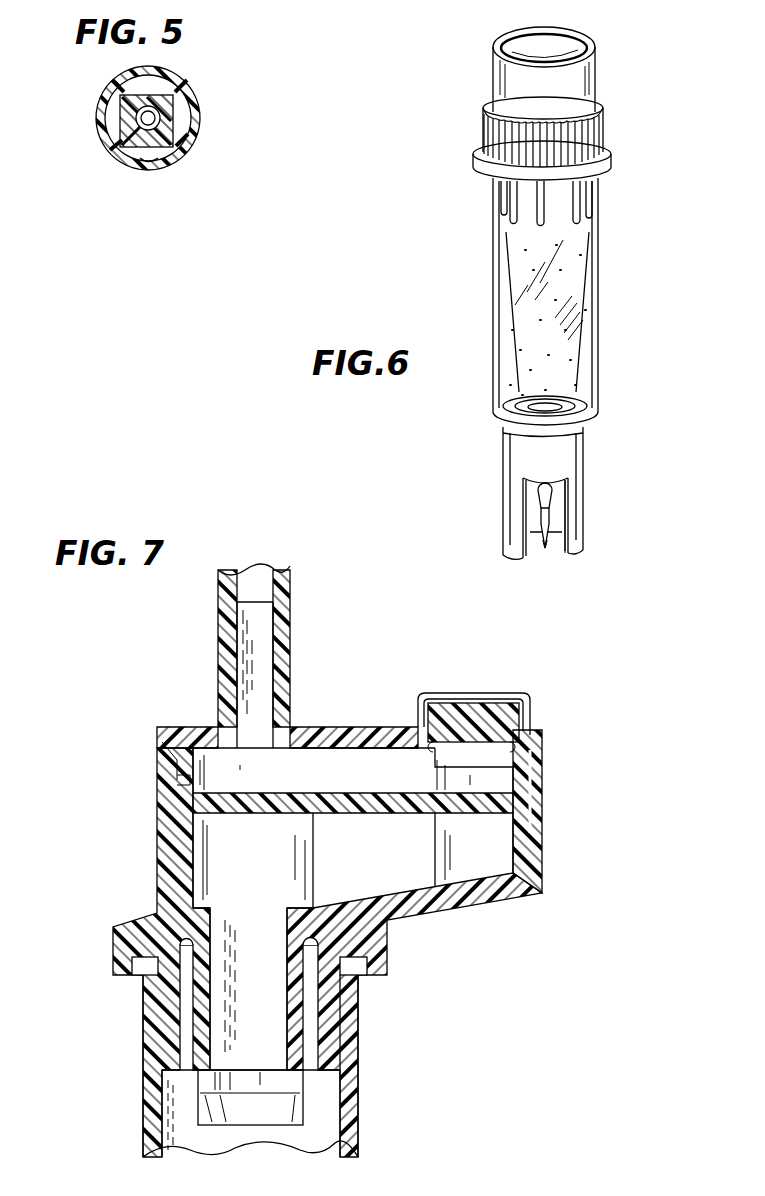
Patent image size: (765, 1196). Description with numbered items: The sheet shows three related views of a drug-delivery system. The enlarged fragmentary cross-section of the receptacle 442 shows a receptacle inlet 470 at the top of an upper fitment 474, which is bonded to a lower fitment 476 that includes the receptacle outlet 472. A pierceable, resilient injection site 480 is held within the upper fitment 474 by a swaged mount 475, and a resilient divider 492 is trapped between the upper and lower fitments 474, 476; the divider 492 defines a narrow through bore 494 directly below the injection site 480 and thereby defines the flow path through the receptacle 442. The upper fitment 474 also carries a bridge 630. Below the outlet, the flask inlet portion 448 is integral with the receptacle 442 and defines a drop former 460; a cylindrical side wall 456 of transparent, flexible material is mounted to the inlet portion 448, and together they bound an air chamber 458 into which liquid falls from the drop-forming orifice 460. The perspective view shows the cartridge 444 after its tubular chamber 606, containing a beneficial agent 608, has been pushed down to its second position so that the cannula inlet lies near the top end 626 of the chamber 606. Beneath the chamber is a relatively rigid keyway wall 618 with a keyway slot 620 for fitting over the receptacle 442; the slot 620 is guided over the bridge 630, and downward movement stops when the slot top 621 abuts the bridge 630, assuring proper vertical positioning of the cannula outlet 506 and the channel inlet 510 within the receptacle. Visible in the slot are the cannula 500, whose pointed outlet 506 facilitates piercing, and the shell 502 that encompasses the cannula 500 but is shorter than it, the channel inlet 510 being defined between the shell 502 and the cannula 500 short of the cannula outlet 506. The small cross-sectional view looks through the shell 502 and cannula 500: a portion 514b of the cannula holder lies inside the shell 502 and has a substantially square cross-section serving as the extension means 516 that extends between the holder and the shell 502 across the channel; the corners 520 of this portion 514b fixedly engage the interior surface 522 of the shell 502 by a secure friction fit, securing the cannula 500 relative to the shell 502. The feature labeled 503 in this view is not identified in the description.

In FIG. 7, the receptacle 442 is at (607, 742).
In FIG. 6, the cartridge 444 is at (622, 238).
In FIG. 7, the flask inlet portion 448 is at (365, 940).
In FIG. 7, the cylindrical side wall 456 is at (148, 1058).
In FIG. 7, the air chamber 458 is at (325, 1127).
In FIG. 7, the drop former 460 is at (300, 1093).
In FIG. 7, the receptacle inlet 470 is at (292, 652).
In FIG. 7, the receptacle outlet 472 is at (222, 945).
In FIG. 7, the upper fitment 474 is at (180, 735).
In FIG. 7, the mount 475 is at (530, 720).
In FIG. 7, the lower fitment 476 is at (157, 872).
In FIG. 7, the injection site 480 is at (488, 703).
In FIG. 7, the resilient divider 492 is at (283, 815).
In FIG. 7, the through bore 494 is at (478, 815).
In FIG. 5, the cannula 500 is at (105, 150).
In FIG. 6, the cannula 500 is at (552, 520).
In FIG. 5, the shell 502 is at (118, 84).
In FIG. 6, the shell 502 is at (540, 490).
In FIG. 5, the rim 503 is at (192, 146).
In FIG. 6, the cannula outlet 506 is at (545, 548).
In FIG. 6, the channel inlet 510 is at (545, 502).
In FIG. 5, the holder portion 514b is at (175, 112).
In FIG. 5, the extension means 516 is at (166, 100).
In FIG. 5, the corners 520 is at (172, 84).
In FIG. 5, the interior surface 522 is at (112, 110).
In FIG. 6, the tubular chamber 606 is at (575, 296).
In FIG. 6, the beneficial agent 608 is at (550, 338).
In FIG. 6, the keyway wall 618 is at (585, 497).
In FIG. 6, the keyway slot 620 is at (565, 555).
In FIG. 6, the slot top 621 is at (556, 482).
In FIG. 6, the top end 626 is at (560, 52).
In FIG. 7, the bridge 630 is at (325, 728).